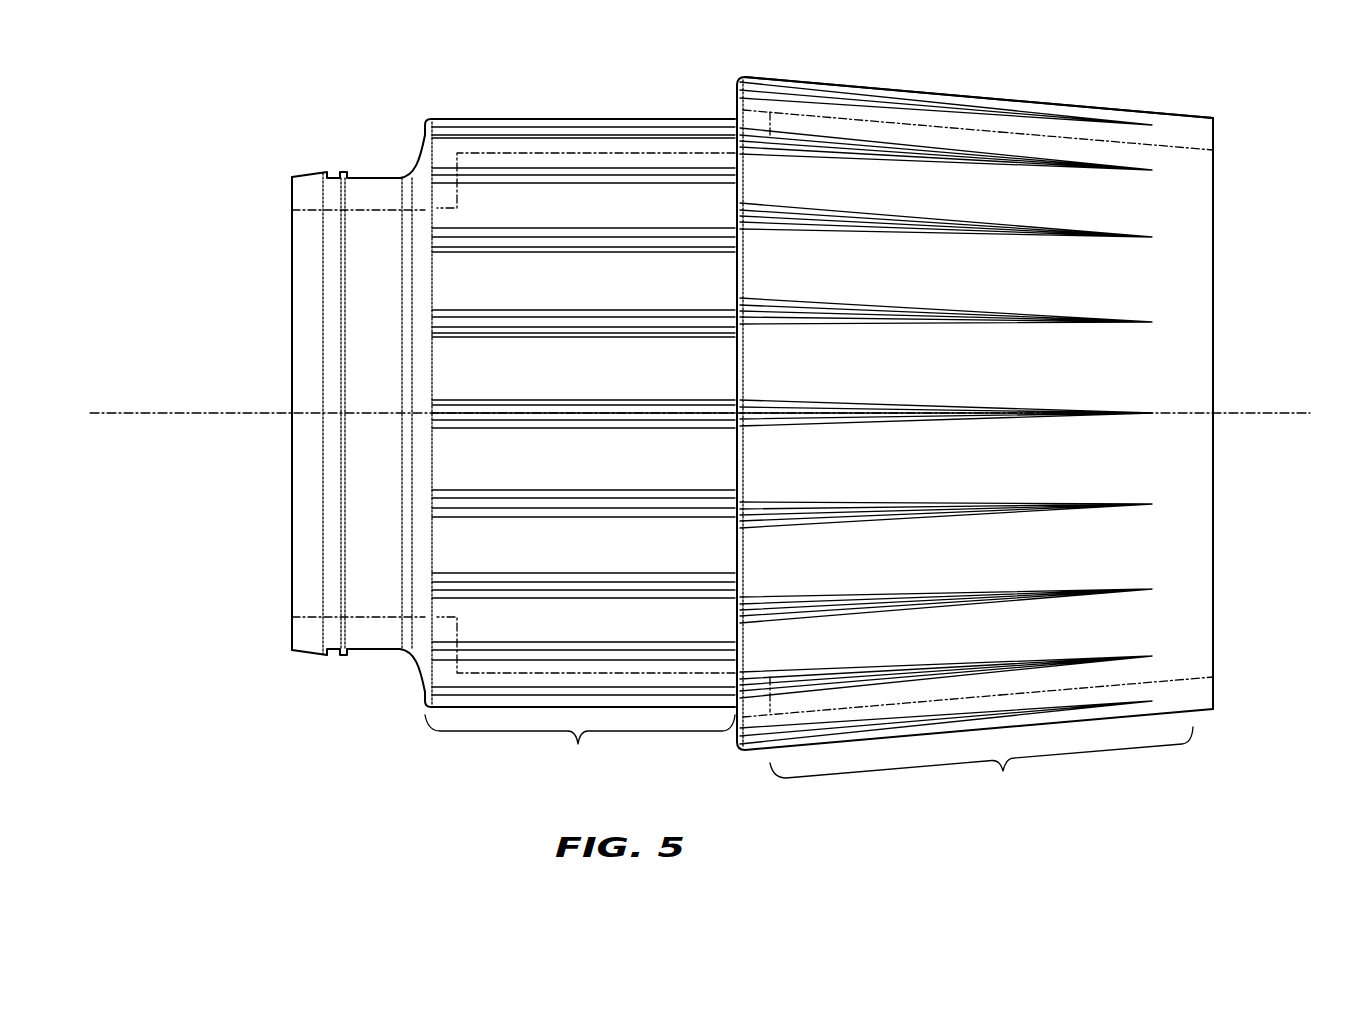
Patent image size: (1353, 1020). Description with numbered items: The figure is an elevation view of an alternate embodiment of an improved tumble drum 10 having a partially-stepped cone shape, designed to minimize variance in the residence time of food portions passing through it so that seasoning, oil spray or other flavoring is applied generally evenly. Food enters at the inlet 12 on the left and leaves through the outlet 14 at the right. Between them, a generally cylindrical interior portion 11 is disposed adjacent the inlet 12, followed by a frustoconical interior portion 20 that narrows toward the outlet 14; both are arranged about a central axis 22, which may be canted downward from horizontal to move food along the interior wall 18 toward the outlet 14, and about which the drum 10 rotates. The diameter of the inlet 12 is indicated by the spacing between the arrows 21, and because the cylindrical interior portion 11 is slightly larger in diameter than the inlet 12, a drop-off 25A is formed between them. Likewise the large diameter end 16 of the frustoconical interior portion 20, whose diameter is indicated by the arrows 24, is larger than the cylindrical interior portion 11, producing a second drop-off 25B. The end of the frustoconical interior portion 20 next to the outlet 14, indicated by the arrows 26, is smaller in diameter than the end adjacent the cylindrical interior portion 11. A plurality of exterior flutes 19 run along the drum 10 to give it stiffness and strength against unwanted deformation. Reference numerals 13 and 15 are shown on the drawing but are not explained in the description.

The tumble drum 10 is at (1083, 105).
The cylindrical interior portion 11 is at (580, 450).
The inlet 12 is at (268, 320).
The cylindrical body outer surface 13 is at (520, 153).
The outlet 14 is at (1246, 320).
The land of body portion 15 is at (598, 153).
The large diameter end 16 is at (899, 125).
The interior wall 18 is at (950, 127).
The exterior flutes 19 is at (580, 517).
The frustoconical interior portion 20 is at (975, 445).
The arrows indicating inlet diameter 21 is at (375, 203).
The central axis 22 is at (200, 415).
The arrows indicating large end diameter 24 is at (770, 106).
The drop-off 25A is at (457, 630).
The drop-off 25B is at (770, 706).
The arrows indicating small end diameter 26 is at (1192, 142).